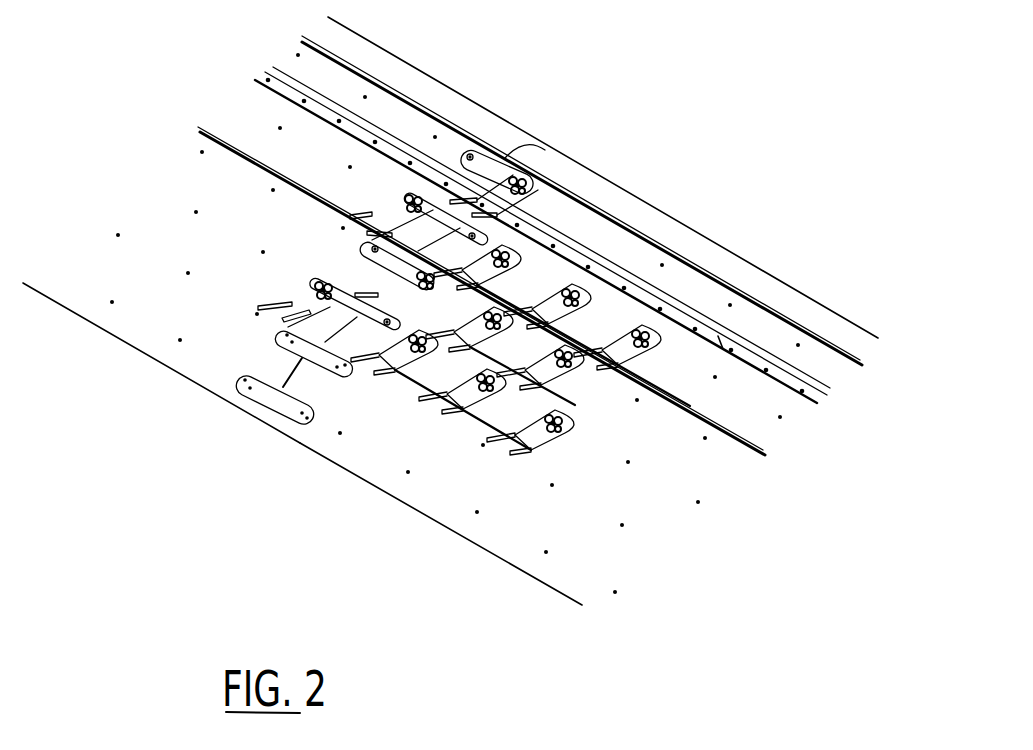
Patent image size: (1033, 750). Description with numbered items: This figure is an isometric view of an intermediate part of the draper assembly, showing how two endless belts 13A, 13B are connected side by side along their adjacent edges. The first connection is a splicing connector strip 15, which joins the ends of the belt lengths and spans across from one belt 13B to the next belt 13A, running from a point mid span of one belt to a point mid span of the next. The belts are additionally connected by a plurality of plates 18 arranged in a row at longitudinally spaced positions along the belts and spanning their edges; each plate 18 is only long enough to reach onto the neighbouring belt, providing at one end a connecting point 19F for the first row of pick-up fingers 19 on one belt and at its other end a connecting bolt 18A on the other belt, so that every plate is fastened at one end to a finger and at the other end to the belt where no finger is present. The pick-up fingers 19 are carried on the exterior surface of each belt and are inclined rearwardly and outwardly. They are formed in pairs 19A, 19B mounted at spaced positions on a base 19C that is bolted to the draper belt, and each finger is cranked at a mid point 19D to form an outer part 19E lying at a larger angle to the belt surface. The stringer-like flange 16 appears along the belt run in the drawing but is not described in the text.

The belt 13A is at (193, 369).
The belt 13B is at (375, 482).
The splicing connector strip 15 is at (617, 283).
The stringer flange 16 is at (572, 240).
The plate 18 is at (267, 391).
The connecting bolt 18A is at (328, 286).
The pick-up finger 19 is at (567, 452).
The finger of pair 19A is at (557, 443).
The finger of pair 19B is at (500, 447).
The base 19C is at (552, 412).
The mid point 19D is at (468, 420).
The outer part 19E is at (445, 425).
The connecting point 19F is at (533, 178).